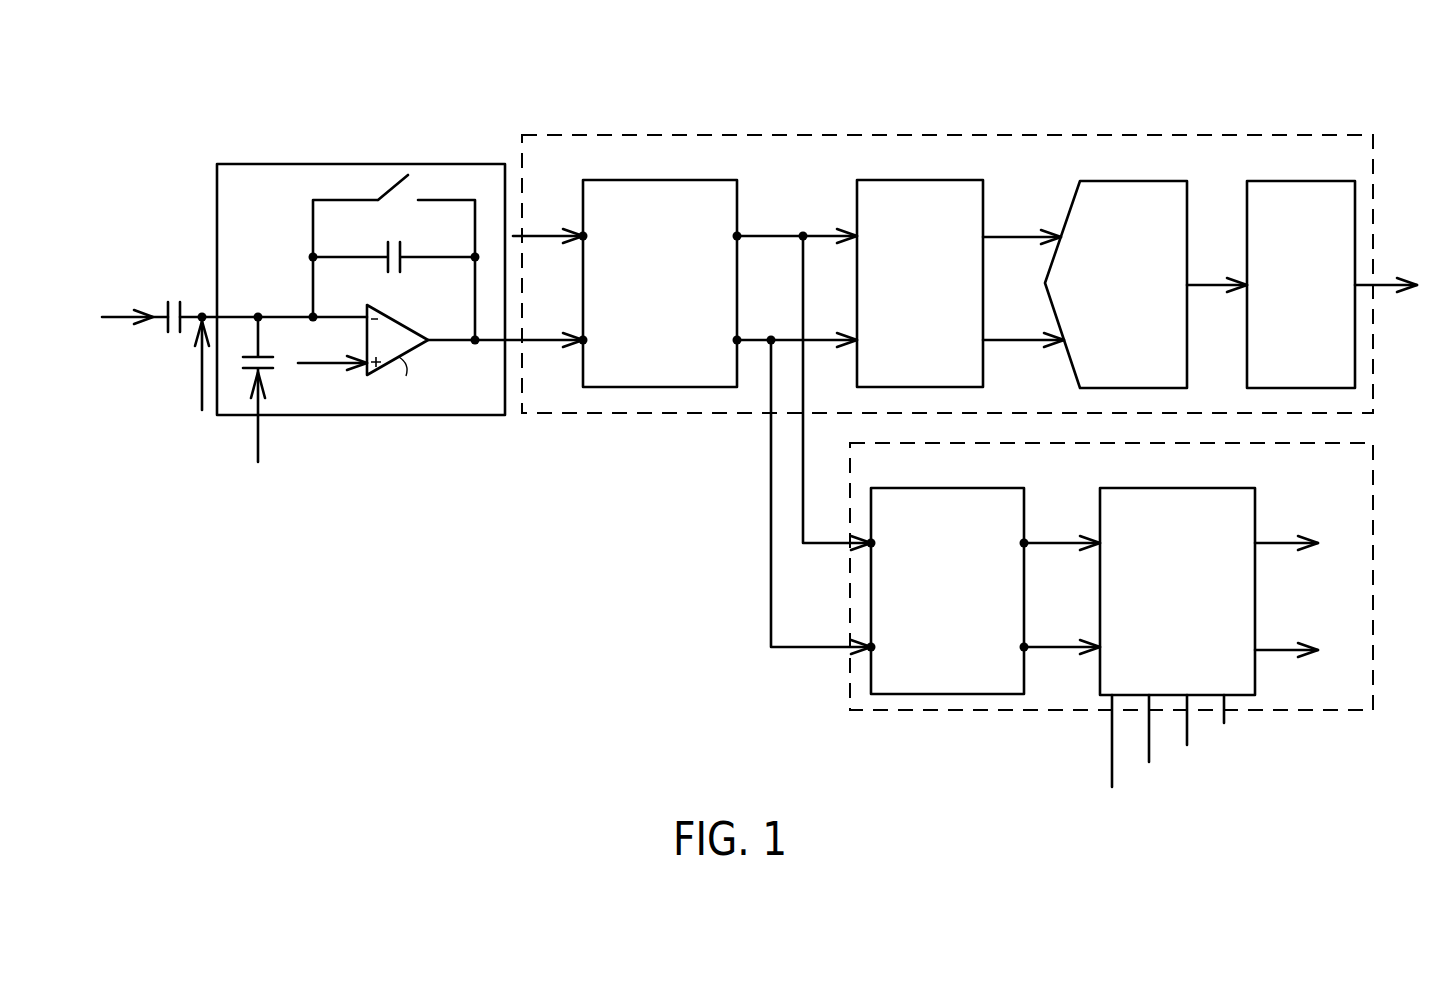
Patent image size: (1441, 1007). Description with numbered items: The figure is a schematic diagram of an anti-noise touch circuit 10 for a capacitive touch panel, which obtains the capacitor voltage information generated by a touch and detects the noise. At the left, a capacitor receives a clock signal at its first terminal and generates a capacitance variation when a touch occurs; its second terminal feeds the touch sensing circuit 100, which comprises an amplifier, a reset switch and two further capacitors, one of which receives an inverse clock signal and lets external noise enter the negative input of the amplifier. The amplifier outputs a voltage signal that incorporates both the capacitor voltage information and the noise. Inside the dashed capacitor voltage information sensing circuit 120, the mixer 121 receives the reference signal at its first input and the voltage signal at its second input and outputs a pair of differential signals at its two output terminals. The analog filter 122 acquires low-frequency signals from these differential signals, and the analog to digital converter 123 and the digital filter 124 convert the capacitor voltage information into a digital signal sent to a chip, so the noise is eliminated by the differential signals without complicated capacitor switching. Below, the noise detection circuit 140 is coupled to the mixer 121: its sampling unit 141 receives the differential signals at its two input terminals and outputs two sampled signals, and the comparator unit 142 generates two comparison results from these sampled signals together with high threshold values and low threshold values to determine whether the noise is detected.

The anti-noise touch circuit 10 is at (1280, 82).
The touch sensing circuit 100 is at (422, 164).
The capacitor voltage information sensing circuit 120 is at (1374, 180).
The mixer 121 is at (700, 180).
The analog filter 122 is at (950, 180).
The analog to digital converter 123 is at (1150, 181).
The digital filter 124 is at (1297, 181).
The noise detection circuit 140 is at (1373, 480).
The sampling unit 141 is at (990, 488).
The comparator unit 142 is at (1218, 488).